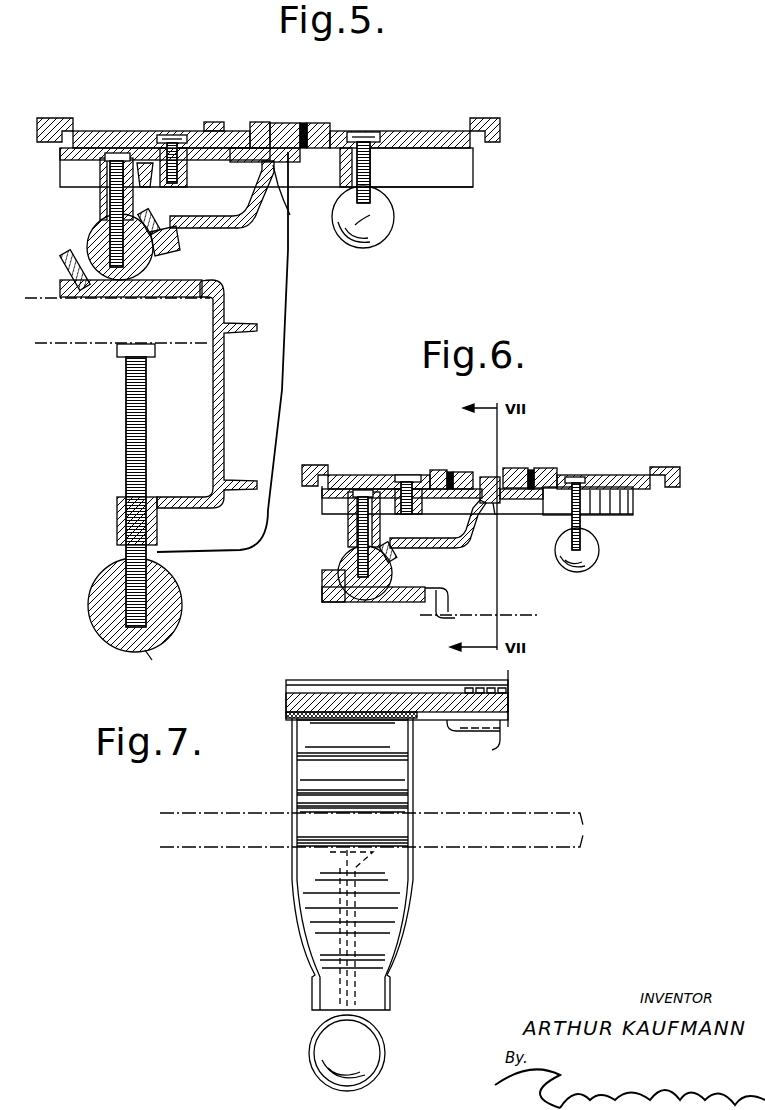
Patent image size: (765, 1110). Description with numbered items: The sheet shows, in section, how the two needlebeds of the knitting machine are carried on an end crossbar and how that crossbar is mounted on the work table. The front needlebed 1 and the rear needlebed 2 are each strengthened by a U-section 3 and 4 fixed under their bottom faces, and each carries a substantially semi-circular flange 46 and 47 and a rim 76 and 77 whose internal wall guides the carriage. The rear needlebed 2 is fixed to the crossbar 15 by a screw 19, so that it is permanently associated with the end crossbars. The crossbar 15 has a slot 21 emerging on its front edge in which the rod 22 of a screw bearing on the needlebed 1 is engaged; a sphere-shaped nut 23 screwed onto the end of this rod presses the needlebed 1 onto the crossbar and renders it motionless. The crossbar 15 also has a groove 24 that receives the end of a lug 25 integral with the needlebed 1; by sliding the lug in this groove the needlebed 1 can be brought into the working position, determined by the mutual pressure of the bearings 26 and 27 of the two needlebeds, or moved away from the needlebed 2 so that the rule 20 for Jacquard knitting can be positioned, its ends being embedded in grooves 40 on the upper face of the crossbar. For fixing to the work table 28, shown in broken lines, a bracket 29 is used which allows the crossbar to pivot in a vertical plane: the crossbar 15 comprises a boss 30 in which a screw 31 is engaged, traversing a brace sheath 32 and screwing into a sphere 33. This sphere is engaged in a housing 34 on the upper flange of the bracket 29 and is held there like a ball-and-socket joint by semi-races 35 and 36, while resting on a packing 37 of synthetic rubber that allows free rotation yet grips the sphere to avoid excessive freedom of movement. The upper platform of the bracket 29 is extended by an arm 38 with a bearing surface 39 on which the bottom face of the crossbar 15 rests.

In FIG. 5, the needlebed 1 is at (404, 131).
In FIG. 6, the needlebed 1 is at (622, 475).
In FIG. 5, the needlebed 2 is at (118, 131).
In FIG. 6, the needlebed 2 is at (355, 475).
In FIG. 7, the needlebed 2 is at (461, 686).
In FIG. 7, the U-section 3 is at (500, 728).
In FIG. 7, the U-section 4 is at (500, 744).
In FIG. 5, the crossbar 15 is at (60, 154).
In FIG. 6, the crossbar 15 is at (320, 494).
In FIG. 7, the crossbar 15 is at (320, 722).
In FIG. 5, the screw 19 is at (167, 131).
In FIG. 6, the screw 19 is at (406, 474).
In FIG. 6, the rule 20 is at (492, 476).
In FIG. 7, the rule 20 is at (402, 694).
In FIG. 5, the slot 21 is at (462, 176).
In FIG. 6, the slot 21 is at (630, 513).
In FIG. 5, the rod 22 is at (372, 170).
In FIG. 6, the rod 22 is at (588, 497).
In FIG. 5, the sphere-shaped nut 23 is at (394, 222).
In FIG. 6, the sphere-shaped nut 23 is at (600, 555).
In FIG. 5, the groove 24 is at (332, 162).
In FIG. 6, the groove 24 is at (520, 501).
In FIG. 5, the lug 25 is at (306, 125).
In FIG. 6, the lug 25 is at (532, 468).
In FIG. 5, the bearing 26 is at (285, 124).
In FIG. 6, the bearing 26 is at (520, 468).
In FIG. 5, the bearing 27 is at (255, 124).
In FIG. 6, the bearing 27 is at (460, 470).
In FIG. 5, the work table 28 is at (108, 345).
In FIG. 7, the work table 28 is at (512, 848).
In FIG. 5, the bracket 29 is at (224, 388).
In FIG. 7, the bracket 29 is at (312, 866).
In FIG. 5, the boss 30 is at (100, 172).
In FIG. 5, the screw 31 is at (106, 188).
In FIG. 6, the screw 31 is at (355, 507).
In FIG. 5, the brace sheath 32 is at (112, 203).
In FIG. 6, the brace sheath 32 is at (380, 529).
In FIG. 5, the sphere 33 is at (88, 235).
In FIG. 6, the sphere 33 is at (356, 600).
In FIG. 5, the housing 34 is at (172, 250).
In FIG. 5, the semi-race 35 is at (150, 214).
In FIG. 6, the semi-race 35 is at (396, 560).
In FIG. 5, the semi-race 36 is at (68, 255).
In FIG. 6, the semi-race 36 is at (330, 574).
In FIG. 5, the packing 37 is at (85, 298).
In FIG. 6, the packing 37 is at (380, 602).
In FIG. 5, the arm 38 is at (290, 275).
In FIG. 6, the arm 38 is at (464, 540).
In FIG. 5, the bearing surface 39 is at (248, 188).
In FIG. 5, the groove 40 is at (273, 168).
In FIG. 6, the groove 40 is at (500, 512).
In FIG. 7, the groove 40 is at (308, 712).
In FIG. 5, the flange 46 is at (318, 126).
In FIG. 6, the flange 46 is at (548, 468).
In FIG. 5, the flange 47 is at (217, 122).
In FIG. 6, the flange 47 is at (438, 470).
In FIG. 5, the rim 76 is at (470, 122).
In FIG. 5, the rim 77 is at (73, 126).
In FIG. 6, the rim 77 is at (337, 467).